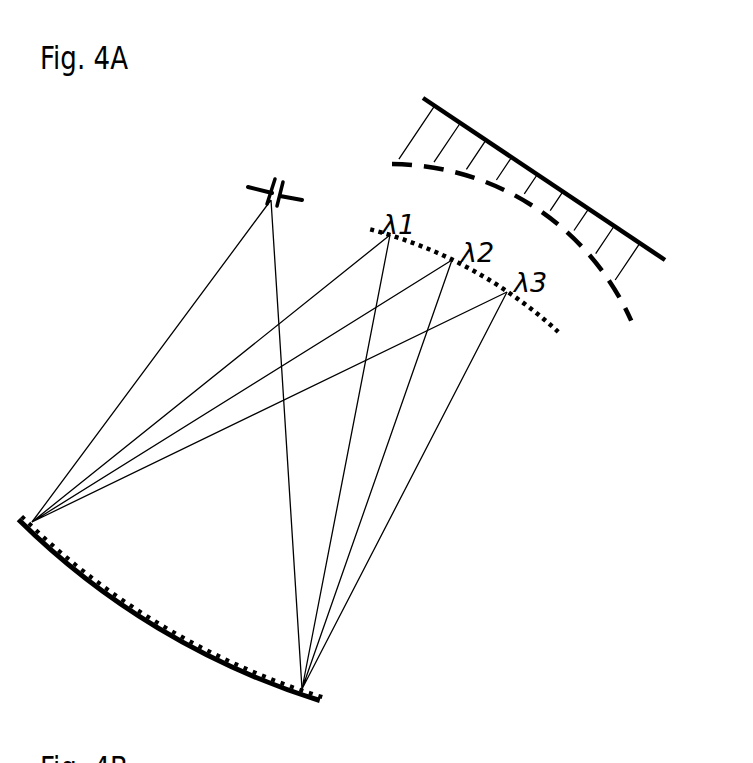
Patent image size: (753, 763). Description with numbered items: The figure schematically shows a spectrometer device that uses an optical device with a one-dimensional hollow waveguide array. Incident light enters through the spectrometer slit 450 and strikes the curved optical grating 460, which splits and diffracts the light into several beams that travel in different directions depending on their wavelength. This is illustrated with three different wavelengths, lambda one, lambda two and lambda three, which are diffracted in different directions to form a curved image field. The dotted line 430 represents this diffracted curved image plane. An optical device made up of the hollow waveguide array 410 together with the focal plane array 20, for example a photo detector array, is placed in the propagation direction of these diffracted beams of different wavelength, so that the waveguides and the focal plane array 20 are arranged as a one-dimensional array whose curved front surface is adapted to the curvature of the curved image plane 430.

The focal plane array 20 is at (580, 195).
The hollow waveguide array 410 is at (612, 330).
The curved image plane 430 is at (543, 335).
The spectrometer slit 450 is at (248, 170).
The curved optical grating 460 is at (202, 660).